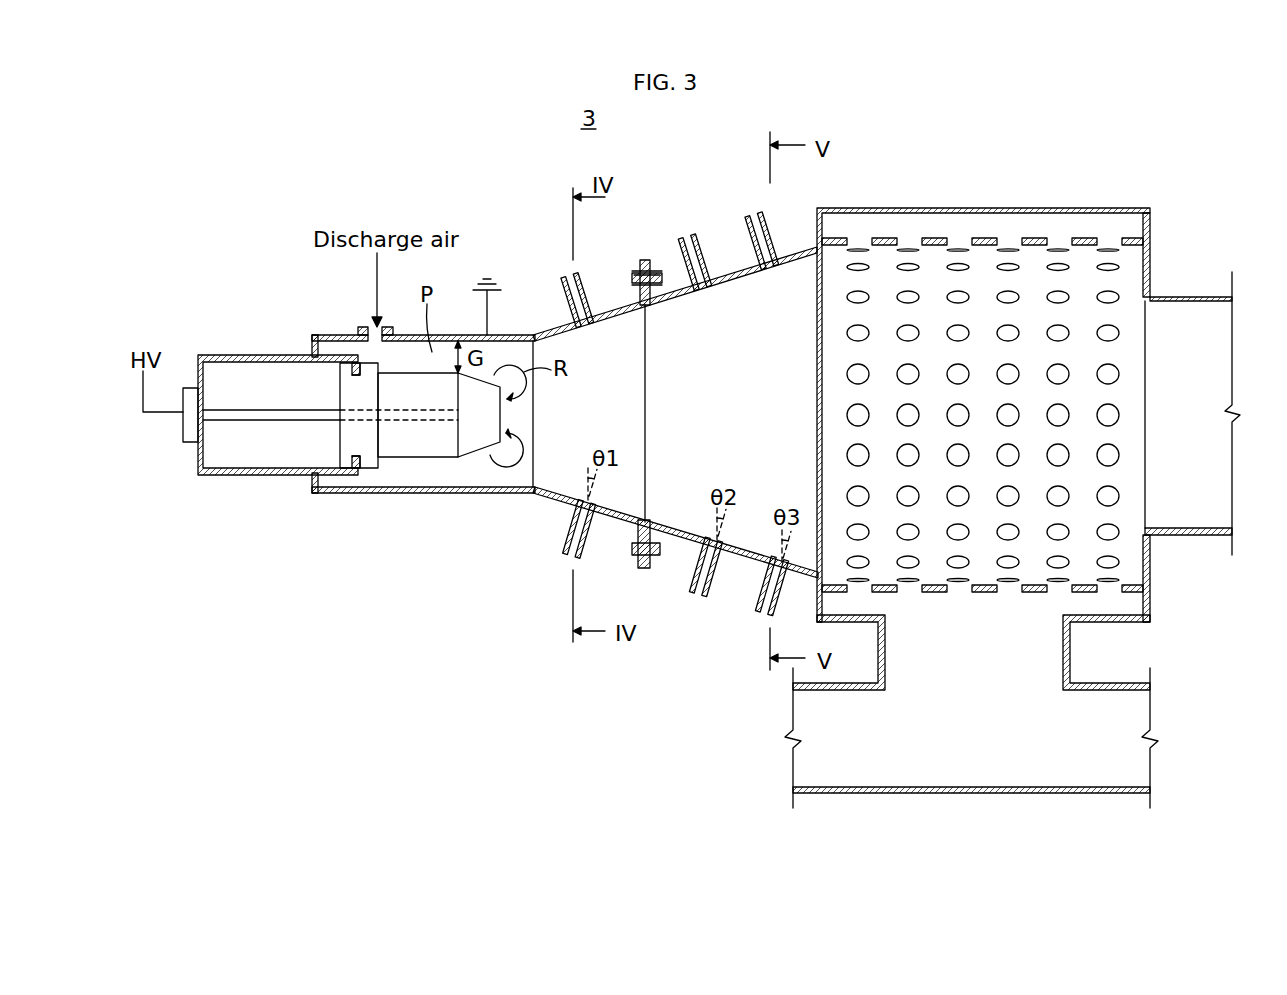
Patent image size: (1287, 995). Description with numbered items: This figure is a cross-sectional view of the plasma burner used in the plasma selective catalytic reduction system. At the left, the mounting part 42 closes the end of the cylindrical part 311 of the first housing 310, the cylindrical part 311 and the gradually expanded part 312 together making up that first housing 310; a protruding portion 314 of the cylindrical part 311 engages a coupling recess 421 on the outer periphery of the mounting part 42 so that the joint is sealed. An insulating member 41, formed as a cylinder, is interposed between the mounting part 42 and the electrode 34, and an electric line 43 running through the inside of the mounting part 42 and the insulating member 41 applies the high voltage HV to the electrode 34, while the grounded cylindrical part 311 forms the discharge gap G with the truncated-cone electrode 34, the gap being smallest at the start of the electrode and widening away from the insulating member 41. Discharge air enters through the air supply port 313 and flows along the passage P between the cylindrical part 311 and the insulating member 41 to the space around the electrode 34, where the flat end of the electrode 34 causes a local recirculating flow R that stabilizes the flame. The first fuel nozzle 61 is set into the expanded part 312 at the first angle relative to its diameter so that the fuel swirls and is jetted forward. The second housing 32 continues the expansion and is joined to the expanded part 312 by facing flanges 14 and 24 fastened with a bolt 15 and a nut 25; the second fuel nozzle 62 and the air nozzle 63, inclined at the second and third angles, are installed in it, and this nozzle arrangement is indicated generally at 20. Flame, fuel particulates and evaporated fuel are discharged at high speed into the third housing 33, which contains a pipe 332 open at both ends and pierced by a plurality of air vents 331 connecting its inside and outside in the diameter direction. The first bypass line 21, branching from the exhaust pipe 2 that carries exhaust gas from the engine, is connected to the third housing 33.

The exhaust pipe 2 is at (1135, 764).
The discharge electrode unit 20 is at (674, 230).
The first bypass line 21 is at (1071, 641).
The flange 14 is at (636, 370).
The bolt 15 is at (632, 278).
The flange 24 is at (653, 270).
The nut 25 is at (658, 278).
The second housing 32 is at (747, 269).
The third housing 33 is at (971, 423).
The air vents 331 is at (1055, 240).
The pipe 332 is at (985, 240).
The electrode 34 is at (478, 437).
The insulating member 41 is at (413, 441).
The mounting part 42 is at (255, 476).
The coupling recess 421 is at (312, 488).
The electric line 43 is at (225, 421).
The first fuel nozzle 61 is at (567, 275).
The second fuel nozzle 62 is at (702, 237).
The air nozzle 63 is at (765, 213).
The housing body 310 is at (565, 483).
The cylindrical part 311 is at (493, 495).
The expanded part 312 is at (558, 500).
The air supply port 313 is at (375, 326).
The protruding portion 314 is at (313, 348).